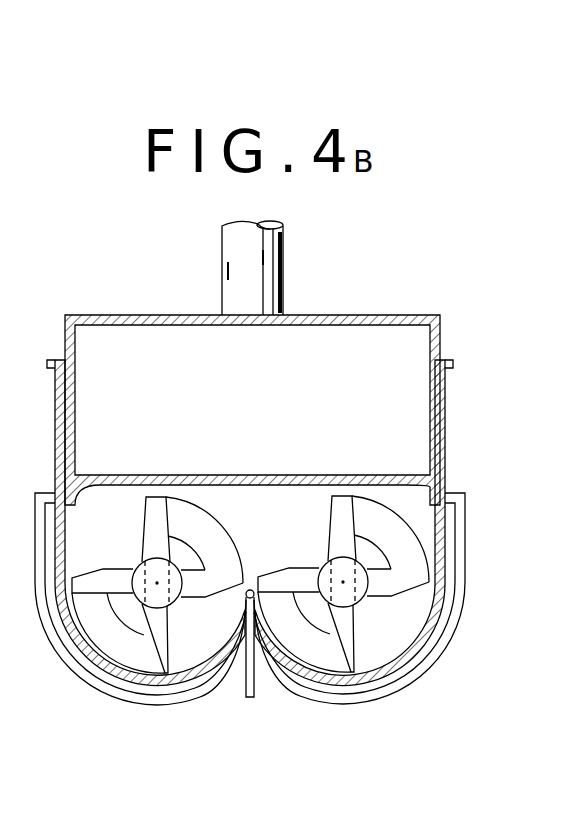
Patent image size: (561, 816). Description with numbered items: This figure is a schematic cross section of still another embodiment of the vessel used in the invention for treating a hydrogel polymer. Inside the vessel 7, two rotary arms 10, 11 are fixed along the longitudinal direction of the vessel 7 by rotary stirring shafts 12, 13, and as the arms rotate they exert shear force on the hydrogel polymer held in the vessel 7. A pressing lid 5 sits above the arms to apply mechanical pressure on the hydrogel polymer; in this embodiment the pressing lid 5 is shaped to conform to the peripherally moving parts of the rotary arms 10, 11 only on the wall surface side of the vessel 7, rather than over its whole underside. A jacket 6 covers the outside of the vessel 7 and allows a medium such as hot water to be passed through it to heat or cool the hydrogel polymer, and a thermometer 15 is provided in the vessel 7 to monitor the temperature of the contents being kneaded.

The pressing lid 5 is at (448, 407).
The jacket 6 is at (363, 687).
The vessel 7 is at (445, 540).
The rotary arm 10 is at (367, 625).
The rotary arm 11 is at (133, 625).
The rotary stirring shaft 12 is at (352, 594).
The rotary stirring shaft 13 is at (160, 581).
The thermometer 15 is at (243, 630).